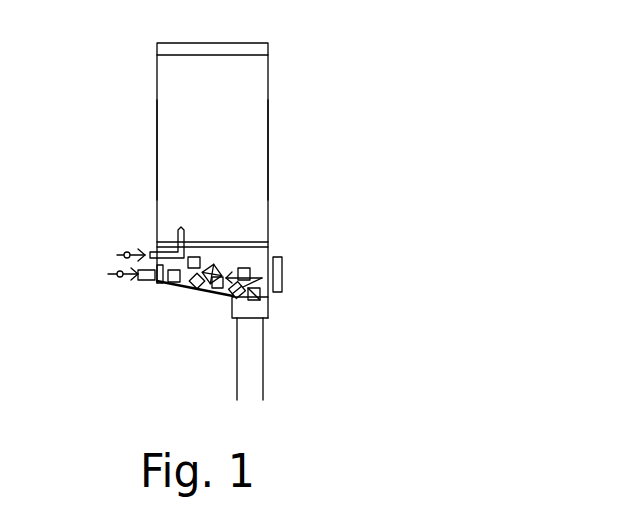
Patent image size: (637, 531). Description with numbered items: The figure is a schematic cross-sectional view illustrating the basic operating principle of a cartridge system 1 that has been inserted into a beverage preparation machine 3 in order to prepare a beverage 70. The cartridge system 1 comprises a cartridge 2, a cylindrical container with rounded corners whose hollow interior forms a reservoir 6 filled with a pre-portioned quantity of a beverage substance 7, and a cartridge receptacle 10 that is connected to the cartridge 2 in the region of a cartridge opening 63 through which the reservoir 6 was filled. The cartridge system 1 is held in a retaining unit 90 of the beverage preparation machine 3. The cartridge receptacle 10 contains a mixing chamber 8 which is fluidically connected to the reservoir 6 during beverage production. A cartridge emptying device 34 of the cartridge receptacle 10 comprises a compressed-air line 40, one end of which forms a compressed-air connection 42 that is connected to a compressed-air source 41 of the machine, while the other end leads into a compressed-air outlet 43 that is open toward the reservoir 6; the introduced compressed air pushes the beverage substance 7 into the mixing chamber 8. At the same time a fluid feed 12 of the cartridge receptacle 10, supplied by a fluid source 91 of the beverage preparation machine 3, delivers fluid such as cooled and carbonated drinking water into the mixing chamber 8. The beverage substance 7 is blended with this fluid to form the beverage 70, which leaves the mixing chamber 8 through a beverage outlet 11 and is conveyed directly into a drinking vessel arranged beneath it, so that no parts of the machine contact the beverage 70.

The cartridge system 1 is at (412, 58).
The cartridge 2 is at (257, 91).
The beverage preparation machine 3 is at (345, 328).
The reservoir 6 is at (250, 173).
The beverage substance 7 is at (172, 152).
The mixing chamber 8 is at (187, 285).
The cartridge receptacle 10 is at (258, 262).
The beverage outlet 11 is at (260, 307).
The fluid feed 12 is at (147, 281).
The cartridge emptying device 34 is at (176, 226).
The compressed-air line 40 is at (183, 229).
The compressed-air source 41 is at (126, 252).
The compressed-air connection 42 is at (157, 237).
The compressed-air outlet 43 is at (205, 262).
The cartridge opening 63 is at (229, 290).
The beverage 70 is at (253, 368).
The retaining unit 90 is at (283, 273).
The fluid source 91 is at (121, 278).